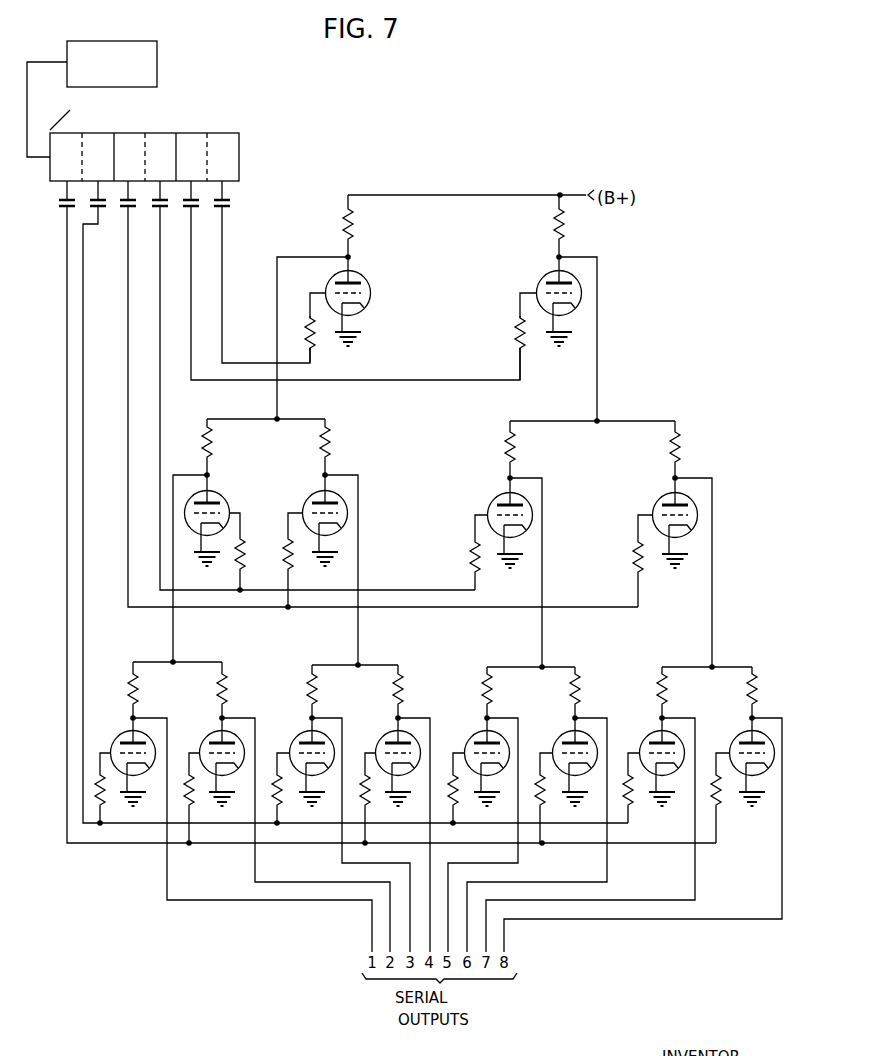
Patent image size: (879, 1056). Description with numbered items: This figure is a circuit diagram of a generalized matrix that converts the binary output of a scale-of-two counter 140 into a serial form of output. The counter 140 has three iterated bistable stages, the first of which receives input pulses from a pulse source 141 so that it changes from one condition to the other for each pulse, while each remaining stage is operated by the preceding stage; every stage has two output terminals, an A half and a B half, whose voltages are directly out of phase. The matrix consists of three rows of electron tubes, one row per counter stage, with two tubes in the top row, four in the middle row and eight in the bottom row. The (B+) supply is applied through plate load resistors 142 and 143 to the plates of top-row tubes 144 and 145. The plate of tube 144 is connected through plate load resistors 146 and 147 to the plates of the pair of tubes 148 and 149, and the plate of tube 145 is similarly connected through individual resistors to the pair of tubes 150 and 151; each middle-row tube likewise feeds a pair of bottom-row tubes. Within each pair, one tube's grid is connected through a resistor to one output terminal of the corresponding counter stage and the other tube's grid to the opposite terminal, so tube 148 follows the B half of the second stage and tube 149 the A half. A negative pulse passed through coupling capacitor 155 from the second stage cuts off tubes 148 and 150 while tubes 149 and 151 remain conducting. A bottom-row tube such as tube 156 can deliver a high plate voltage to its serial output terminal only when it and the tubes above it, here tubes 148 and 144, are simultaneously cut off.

The scale-of-two counter 140 is at (208, 145).
The pulse source 141 is at (158, 63).
The plate load resistor 142 is at (353, 232).
The plate load resistor 143 is at (553, 233).
The tube 144 is at (369, 284).
The tube 145 is at (537, 285).
The plate load resistor 146 is at (213, 443).
The plate load resistor 147 is at (330, 445).
The tube 148 is at (216, 495).
The tube 149 is at (313, 492).
The tube 150 is at (493, 496).
The tube 151 is at (659, 494).
The coupling capacitor 155 is at (160, 208).
The tube 156 is at (118, 731).